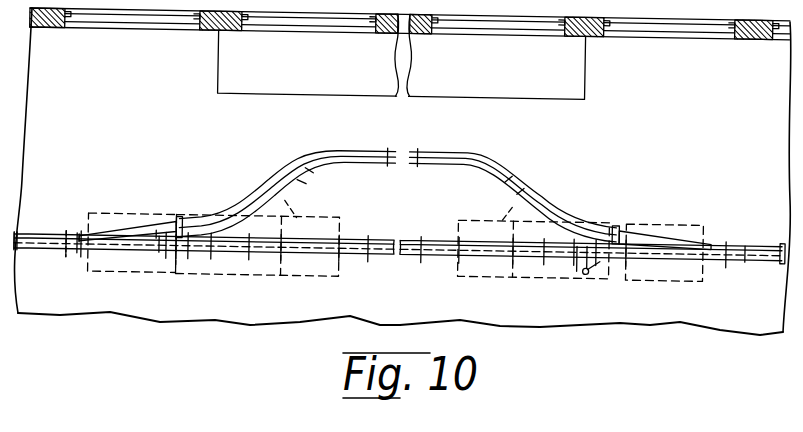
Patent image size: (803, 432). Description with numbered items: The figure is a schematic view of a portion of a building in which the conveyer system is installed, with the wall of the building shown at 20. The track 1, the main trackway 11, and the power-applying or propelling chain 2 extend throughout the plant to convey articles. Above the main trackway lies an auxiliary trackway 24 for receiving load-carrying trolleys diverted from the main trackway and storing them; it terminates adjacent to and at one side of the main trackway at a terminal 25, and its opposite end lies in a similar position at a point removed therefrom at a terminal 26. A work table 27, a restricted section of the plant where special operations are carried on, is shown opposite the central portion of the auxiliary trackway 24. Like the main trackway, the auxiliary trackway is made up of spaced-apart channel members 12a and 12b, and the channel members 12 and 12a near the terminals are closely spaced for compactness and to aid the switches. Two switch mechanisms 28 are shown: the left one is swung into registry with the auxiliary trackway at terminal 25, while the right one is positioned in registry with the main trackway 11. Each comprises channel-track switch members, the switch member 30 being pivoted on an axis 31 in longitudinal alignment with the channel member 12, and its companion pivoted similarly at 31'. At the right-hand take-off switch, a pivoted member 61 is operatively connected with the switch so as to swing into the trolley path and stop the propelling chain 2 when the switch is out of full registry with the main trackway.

The track 1 is at (163, 251).
The power-applying or propelling chain 2 is at (21, 252).
The main trackway 11 is at (438, 252).
The channel member 12 is at (354, 232).
The channel member 12a is at (470, 160).
The channel member 12b is at (472, 147).
The wall of the building 20 is at (206, 28).
The auxiliary trackway 24 is at (440, 137).
The terminal of auxiliary trackway 25 is at (186, 212).
The terminal of auxiliary trackway 26 is at (627, 221).
The work table 27 is at (564, 69).
The switch mechanism 28 is at (128, 226).
The switch member 30 is at (158, 229).
The axis 31 is at (137, 244).
The pivot 31' is at (85, 267).
The pivoted member 61 is at (591, 265).